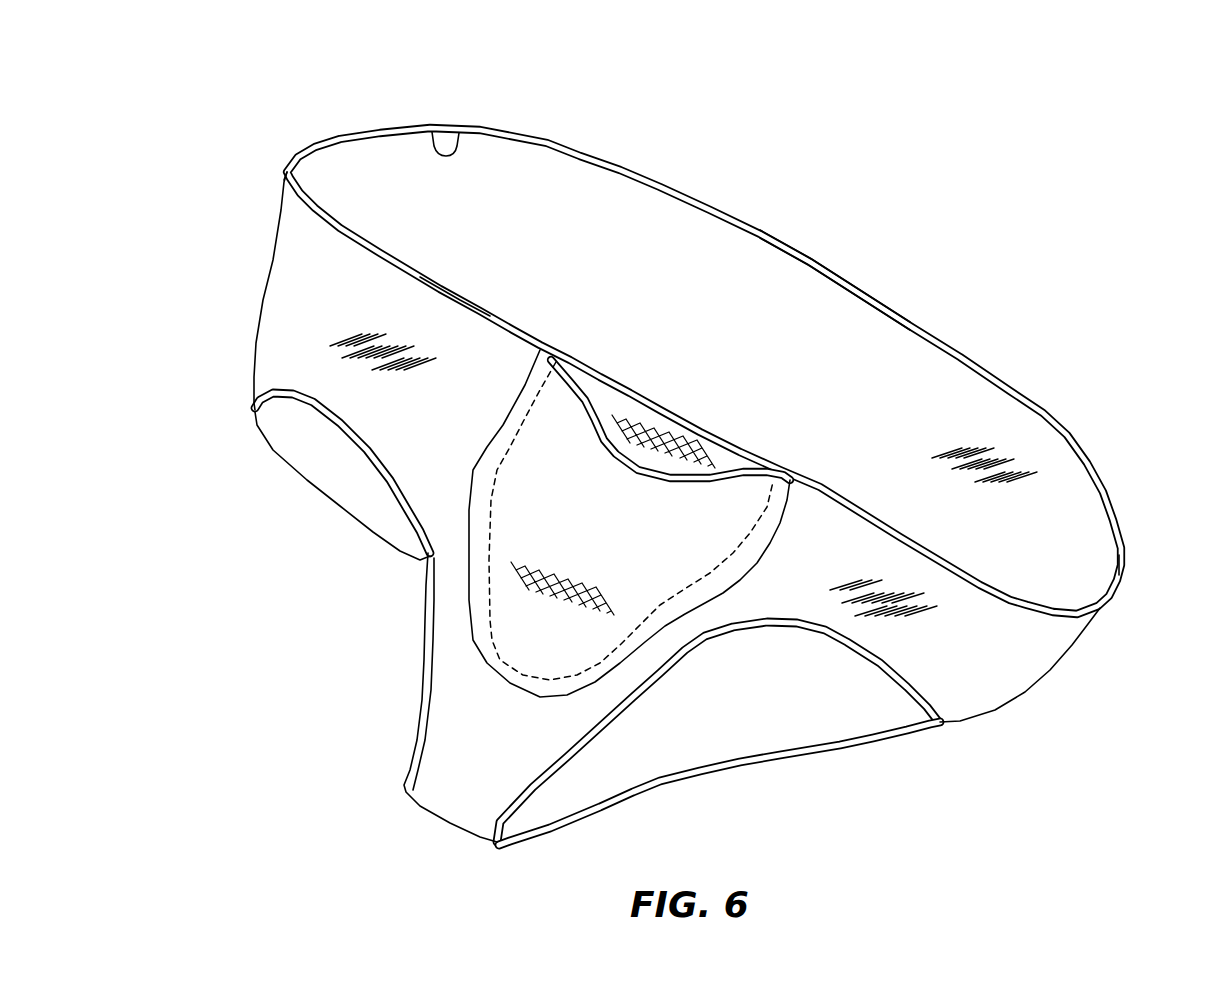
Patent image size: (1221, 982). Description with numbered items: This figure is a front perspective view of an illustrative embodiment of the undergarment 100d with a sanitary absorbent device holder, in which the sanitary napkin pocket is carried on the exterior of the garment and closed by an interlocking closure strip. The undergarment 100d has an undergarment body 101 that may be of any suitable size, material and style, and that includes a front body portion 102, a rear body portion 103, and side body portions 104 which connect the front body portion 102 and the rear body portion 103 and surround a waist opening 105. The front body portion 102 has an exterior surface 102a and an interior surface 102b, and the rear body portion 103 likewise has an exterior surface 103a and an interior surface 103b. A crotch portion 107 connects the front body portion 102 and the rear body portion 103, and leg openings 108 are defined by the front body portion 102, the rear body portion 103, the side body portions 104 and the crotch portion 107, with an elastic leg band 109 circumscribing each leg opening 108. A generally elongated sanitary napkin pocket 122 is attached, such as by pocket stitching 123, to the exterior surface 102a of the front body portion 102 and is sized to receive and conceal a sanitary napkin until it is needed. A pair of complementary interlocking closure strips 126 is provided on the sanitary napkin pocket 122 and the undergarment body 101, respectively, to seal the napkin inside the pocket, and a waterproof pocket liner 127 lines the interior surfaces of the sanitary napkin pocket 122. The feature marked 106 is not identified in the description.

The undergarment 100d is at (322, 104).
The undergarment body 101 is at (1106, 467).
The front body portion 102 is at (290, 273).
The exterior surface 102a is at (364, 321).
The interior surface 102b is at (443, 281).
The rear body portion 103 is at (778, 236).
The exterior surface 103a is at (833, 266).
The interior surface 103b is at (827, 277).
The side body portions 104 is at (289, 168).
The waist opening 105 is at (524, 164).
The stitch loop 106 is at (436, 131).
The crotch portion 107 is at (467, 705).
The leg openings 108 is at (334, 463).
The elastic leg band 109 is at (332, 426).
The sanitary napkin pocket 122 is at (530, 442).
The pocket stitching 123 is at (498, 453).
The complementary interlocking closure strips 126 is at (588, 408).
The waterproof pocket liner 127 is at (622, 413).